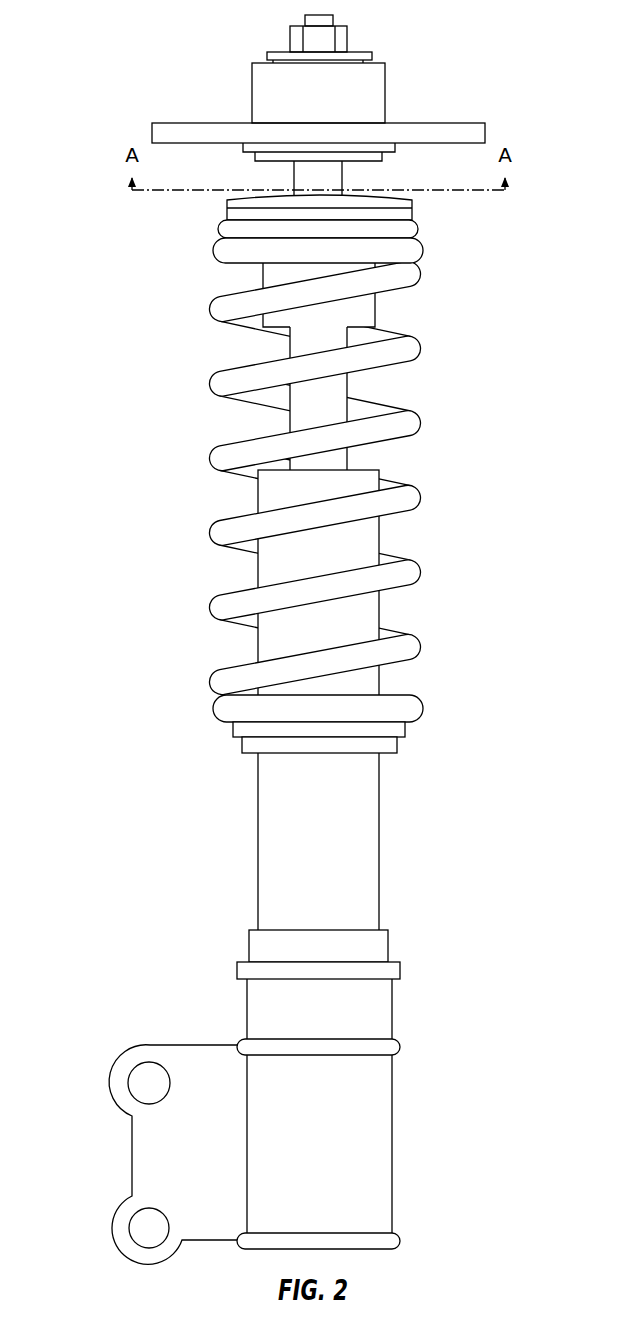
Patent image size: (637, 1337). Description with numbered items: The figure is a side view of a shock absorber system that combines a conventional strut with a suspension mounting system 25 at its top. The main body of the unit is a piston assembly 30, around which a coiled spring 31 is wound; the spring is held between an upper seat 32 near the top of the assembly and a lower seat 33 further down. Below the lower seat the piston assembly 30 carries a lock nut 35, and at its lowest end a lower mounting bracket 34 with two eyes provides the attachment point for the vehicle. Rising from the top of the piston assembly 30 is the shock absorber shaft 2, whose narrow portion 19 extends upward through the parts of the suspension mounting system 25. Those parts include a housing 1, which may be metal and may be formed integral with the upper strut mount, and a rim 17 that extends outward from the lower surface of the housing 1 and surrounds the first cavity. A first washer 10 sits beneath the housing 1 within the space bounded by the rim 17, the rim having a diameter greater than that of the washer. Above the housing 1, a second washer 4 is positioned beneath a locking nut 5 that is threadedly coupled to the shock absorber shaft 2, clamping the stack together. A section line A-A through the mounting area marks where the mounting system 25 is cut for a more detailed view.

The housing 1 is at (385, 95).
The shock absorber shaft 2 is at (342, 183).
The second washer 4 is at (267, 57).
The locking nut 5 is at (338, 40).
The first washer 10 is at (255, 156).
The rim 17 is at (393, 145).
The narrow portion 19 is at (320, 15).
The suspension mounting system 25 is at (170, 82).
The piston assembly 30 is at (100, 689).
The coiled spring 31 is at (213, 532).
The upper seat 32 is at (222, 228).
The lower seat 33 is at (235, 728).
The lower mounting bracket 34 is at (100, 1155).
The lock nut 35 is at (383, 947).